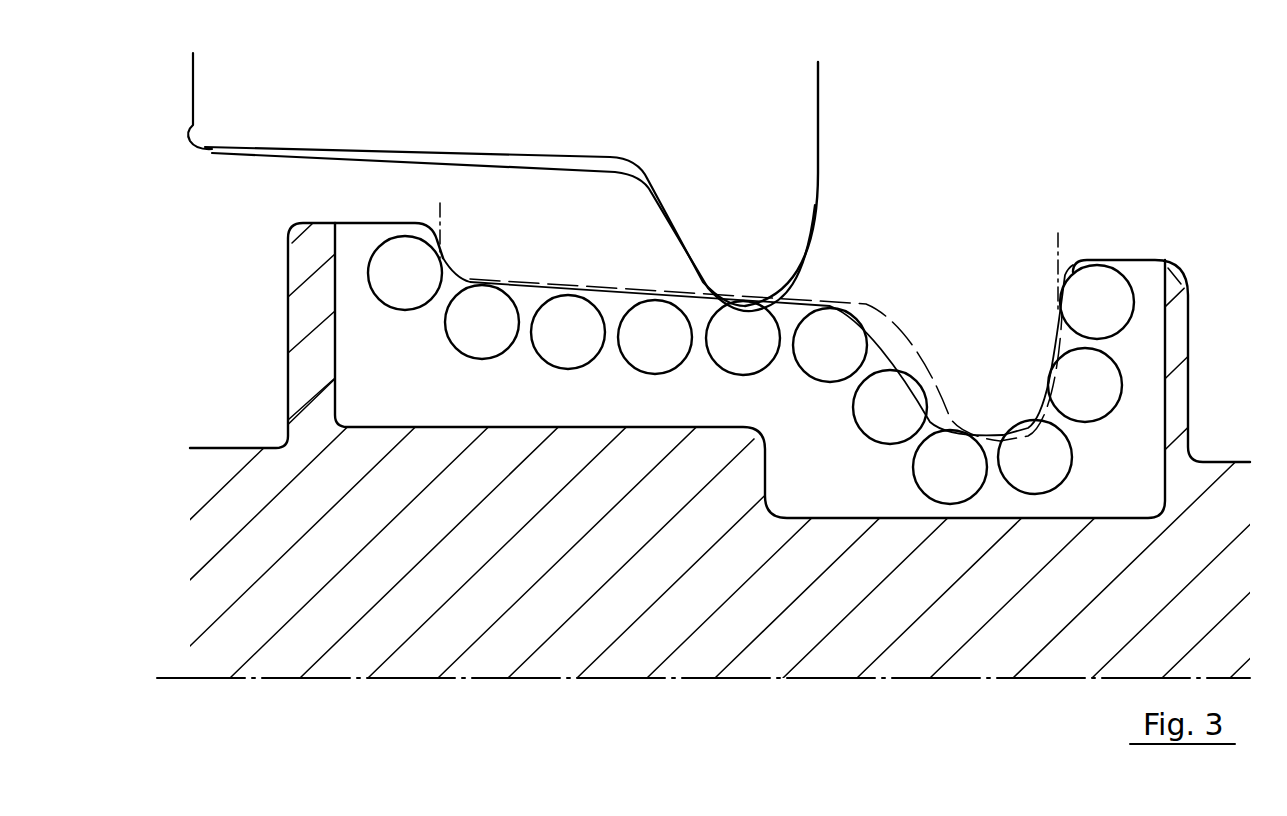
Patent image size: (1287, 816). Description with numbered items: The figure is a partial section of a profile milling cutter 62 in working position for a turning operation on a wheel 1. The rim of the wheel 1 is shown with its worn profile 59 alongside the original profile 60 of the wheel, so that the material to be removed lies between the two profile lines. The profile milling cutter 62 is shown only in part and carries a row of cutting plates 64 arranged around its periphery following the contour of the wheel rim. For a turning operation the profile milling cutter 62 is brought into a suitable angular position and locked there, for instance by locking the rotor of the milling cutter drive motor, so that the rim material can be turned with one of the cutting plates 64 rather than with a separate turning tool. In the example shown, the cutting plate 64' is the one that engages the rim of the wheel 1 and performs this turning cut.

The wheel 1 is at (722, 96).
The worn profile 59 is at (630, 163).
The original profile 60 is at (647, 187).
The profile milling cutter 62 is at (1068, 595).
The cutting plate 64 is at (751, 370).
The cutting plate 64' is at (743, 359).